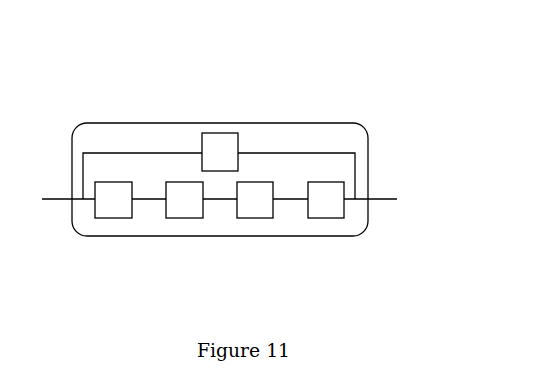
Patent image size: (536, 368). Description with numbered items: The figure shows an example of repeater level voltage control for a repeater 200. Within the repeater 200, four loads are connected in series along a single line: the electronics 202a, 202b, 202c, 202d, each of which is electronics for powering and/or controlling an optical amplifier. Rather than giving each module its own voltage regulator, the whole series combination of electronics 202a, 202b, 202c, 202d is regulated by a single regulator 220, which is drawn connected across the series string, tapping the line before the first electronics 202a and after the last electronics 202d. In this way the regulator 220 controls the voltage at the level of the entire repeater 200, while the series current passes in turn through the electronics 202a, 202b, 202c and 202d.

The repeater 200 is at (363, 79).
The regulator 220 is at (220, 133).
The electronics 202a is at (113, 218).
The electronics 202b is at (183, 218).
The electronics 202c is at (255, 218).
The electronics 202d is at (325, 218).